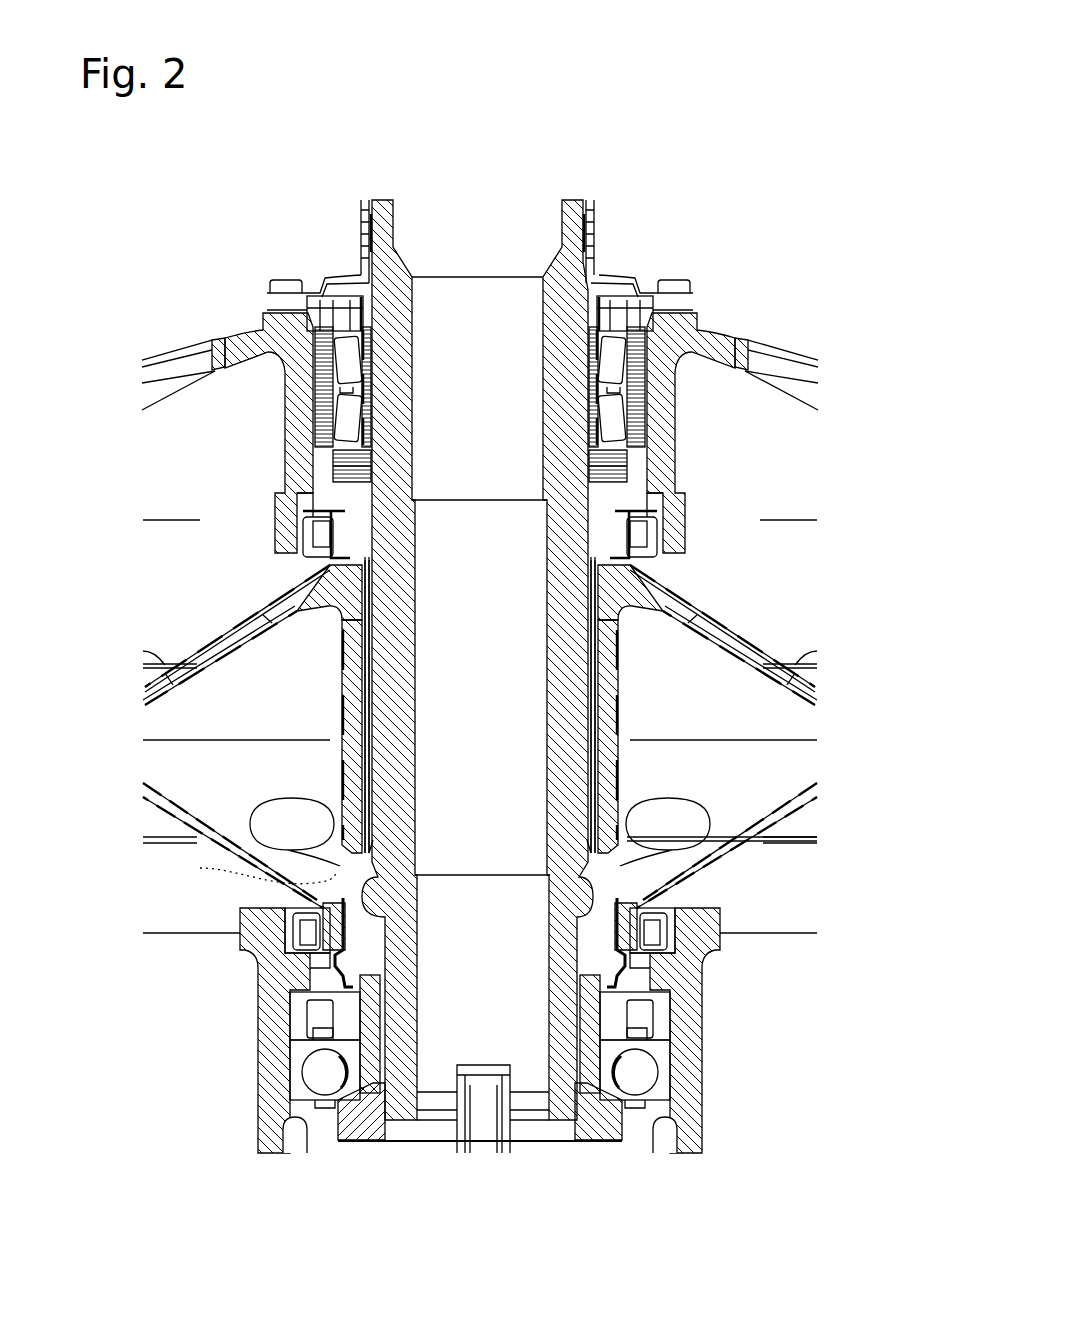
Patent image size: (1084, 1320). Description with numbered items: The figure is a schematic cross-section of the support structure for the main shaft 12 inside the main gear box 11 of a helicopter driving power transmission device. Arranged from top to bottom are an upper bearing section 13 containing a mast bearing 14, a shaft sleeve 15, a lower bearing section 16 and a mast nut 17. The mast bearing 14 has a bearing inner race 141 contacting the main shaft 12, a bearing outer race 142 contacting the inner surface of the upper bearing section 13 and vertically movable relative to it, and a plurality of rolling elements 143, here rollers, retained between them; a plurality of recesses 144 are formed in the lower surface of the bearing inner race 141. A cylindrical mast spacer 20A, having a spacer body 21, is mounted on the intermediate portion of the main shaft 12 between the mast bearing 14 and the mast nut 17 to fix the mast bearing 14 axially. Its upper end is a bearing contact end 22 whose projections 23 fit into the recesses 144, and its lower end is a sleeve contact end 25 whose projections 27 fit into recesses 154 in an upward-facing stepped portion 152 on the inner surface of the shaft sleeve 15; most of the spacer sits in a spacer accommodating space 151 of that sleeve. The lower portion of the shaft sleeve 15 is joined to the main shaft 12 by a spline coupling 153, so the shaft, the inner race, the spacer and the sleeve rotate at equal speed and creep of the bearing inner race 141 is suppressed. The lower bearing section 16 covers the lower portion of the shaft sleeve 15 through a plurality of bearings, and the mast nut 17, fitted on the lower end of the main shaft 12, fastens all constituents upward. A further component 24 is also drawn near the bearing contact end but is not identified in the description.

The main gear box 11 is at (636, 207).
The main shaft 12 is at (377, 232).
The upper bearing section 13 is at (697, 312).
The mast bearing 14 is at (272, 338).
The bearing inner race 141 is at (660, 427).
The bearing outer race 142 is at (620, 402).
The rolling elements 143 is at (650, 410).
The recesses 144 is at (355, 440).
The shaft sleeve 15 is at (623, 738).
The spacer accommodating space 151 is at (600, 722).
The stepped portion 152 is at (622, 762).
The spline coupling 153 is at (355, 1007).
The recesses 154 is at (200, 868).
The lower bearing section 16 is at (703, 1023).
The mast nut 17 is at (605, 1143).
The mast spacer 20A is at (628, 567).
The spacer body 21 is at (343, 705).
The bearing contact end 22 is at (330, 518).
The projections 23 is at (335, 467).
The retainer 24 is at (327, 566).
The sleeve contact end 25 is at (628, 897).
The projections 27 is at (332, 845).